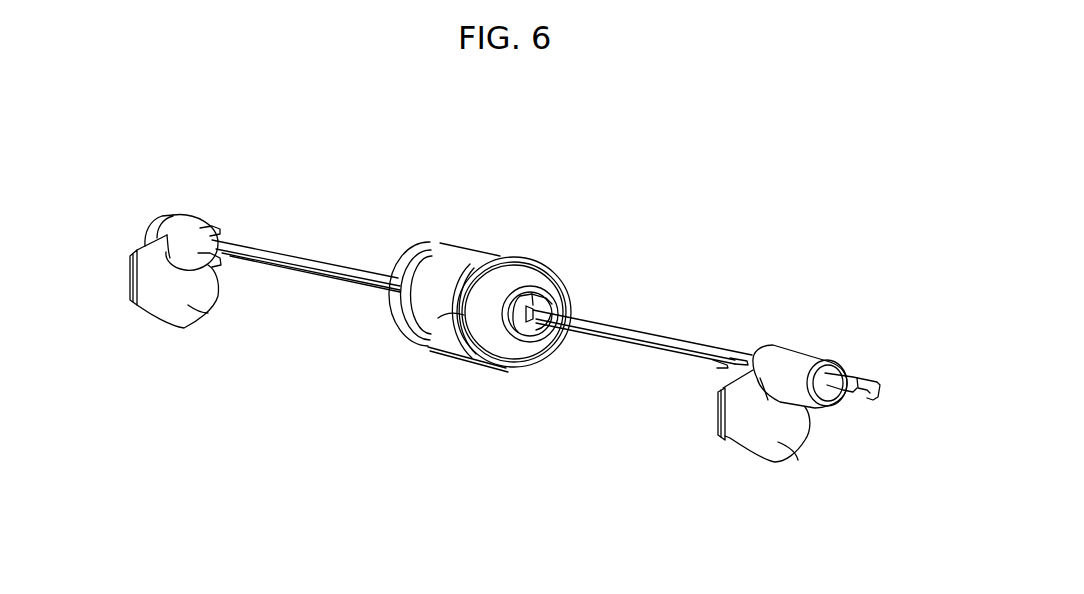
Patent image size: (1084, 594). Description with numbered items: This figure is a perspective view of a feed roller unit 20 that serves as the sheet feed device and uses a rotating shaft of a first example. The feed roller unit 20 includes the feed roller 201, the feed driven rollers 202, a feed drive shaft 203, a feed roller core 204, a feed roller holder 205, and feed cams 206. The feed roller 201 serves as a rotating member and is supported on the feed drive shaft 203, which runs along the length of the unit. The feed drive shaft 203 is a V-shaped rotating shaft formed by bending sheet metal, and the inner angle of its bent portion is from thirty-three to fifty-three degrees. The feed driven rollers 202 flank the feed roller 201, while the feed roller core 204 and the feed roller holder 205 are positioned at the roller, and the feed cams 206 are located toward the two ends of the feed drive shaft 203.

The feed roller unit 20 is at (365, 143).
The feed roller 201 is at (478, 252).
The feed driven rollers 202 is at (410, 244).
The feed drive shaft 203 is at (293, 252).
The feed roller core 204 is at (456, 364).
The feed roller holder 205 is at (455, 313).
The feed cams 206 is at (208, 313).